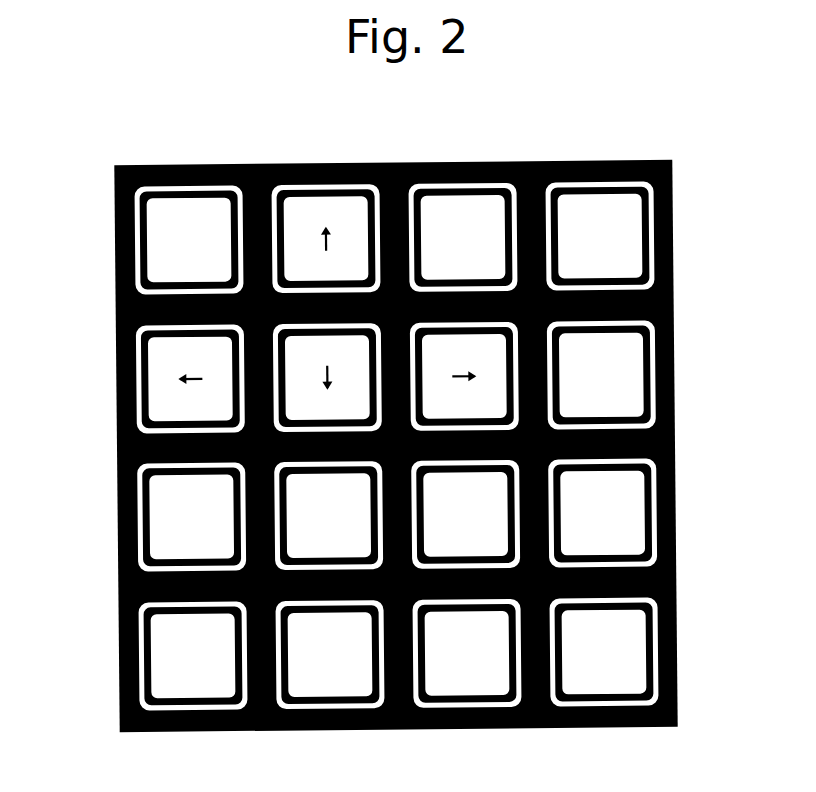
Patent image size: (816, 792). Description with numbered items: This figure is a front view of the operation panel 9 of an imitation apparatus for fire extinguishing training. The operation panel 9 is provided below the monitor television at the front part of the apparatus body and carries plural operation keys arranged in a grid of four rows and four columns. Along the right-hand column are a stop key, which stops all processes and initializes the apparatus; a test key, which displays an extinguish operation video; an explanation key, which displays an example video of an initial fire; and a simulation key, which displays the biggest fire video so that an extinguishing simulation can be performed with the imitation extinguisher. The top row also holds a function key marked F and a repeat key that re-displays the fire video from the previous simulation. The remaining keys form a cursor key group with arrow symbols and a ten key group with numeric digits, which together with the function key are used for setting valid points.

The operation panel 9 is at (672, 162).